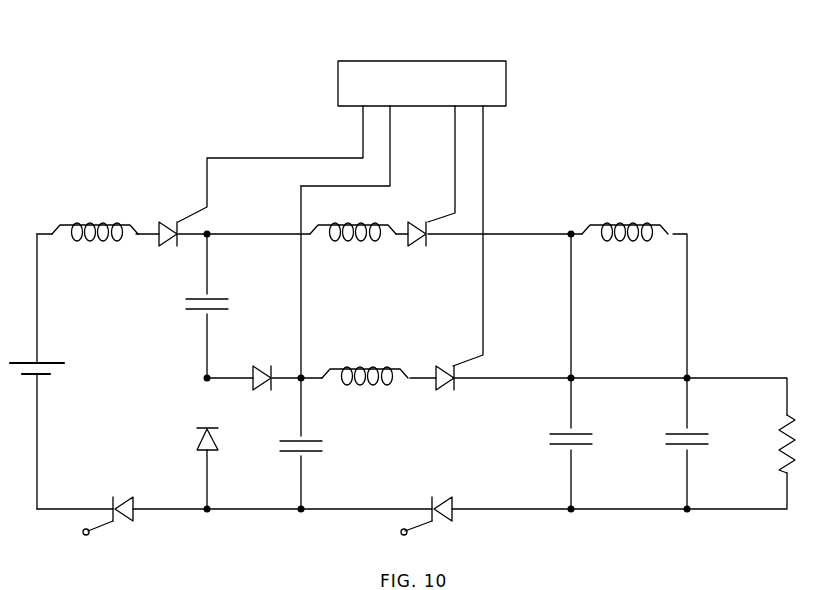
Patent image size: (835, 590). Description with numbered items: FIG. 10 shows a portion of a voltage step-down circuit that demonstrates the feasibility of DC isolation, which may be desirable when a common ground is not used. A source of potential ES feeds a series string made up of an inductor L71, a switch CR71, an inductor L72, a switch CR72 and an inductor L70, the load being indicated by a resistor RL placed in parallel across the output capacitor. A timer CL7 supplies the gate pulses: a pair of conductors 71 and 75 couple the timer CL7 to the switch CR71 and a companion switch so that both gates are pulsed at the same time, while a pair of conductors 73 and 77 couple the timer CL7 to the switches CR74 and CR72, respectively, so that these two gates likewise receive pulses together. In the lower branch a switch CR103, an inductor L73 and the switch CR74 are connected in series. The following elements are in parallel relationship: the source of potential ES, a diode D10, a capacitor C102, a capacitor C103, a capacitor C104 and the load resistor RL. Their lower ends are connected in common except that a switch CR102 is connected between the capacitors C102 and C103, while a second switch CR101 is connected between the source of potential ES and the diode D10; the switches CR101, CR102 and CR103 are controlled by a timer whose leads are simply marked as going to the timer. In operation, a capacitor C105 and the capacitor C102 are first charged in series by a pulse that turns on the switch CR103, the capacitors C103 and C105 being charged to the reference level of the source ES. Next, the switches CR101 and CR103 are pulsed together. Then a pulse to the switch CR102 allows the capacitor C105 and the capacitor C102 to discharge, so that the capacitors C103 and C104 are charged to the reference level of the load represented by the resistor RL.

The timer CL7 is at (507, 80).
The conductor 71 is at (362, 138).
The conductor 75 is at (390, 138).
The conductor 77 is at (455, 188).
The conductor 73 is at (484, 167).
The inductor L71 is at (72, 223).
The inductor L72 is at (348, 238).
The inductor L73 is at (347, 383).
The inductor L70 is at (612, 225).
The switch CR71 is at (171, 246).
The switch CR72 is at (420, 243).
The switch CR74 is at (437, 370).
The switch CR103 is at (250, 370).
The switch CR101 is at (132, 496).
The switch CR102 is at (453, 500).
The capacitor C105 is at (197, 312).
The capacitor C102 is at (322, 452).
The capacitor C103 is at (560, 430).
The capacitor C104 is at (685, 447).
The diode D10 is at (198, 440).
The source of potential ES is at (55, 368).
The load resistor RL is at (785, 457).